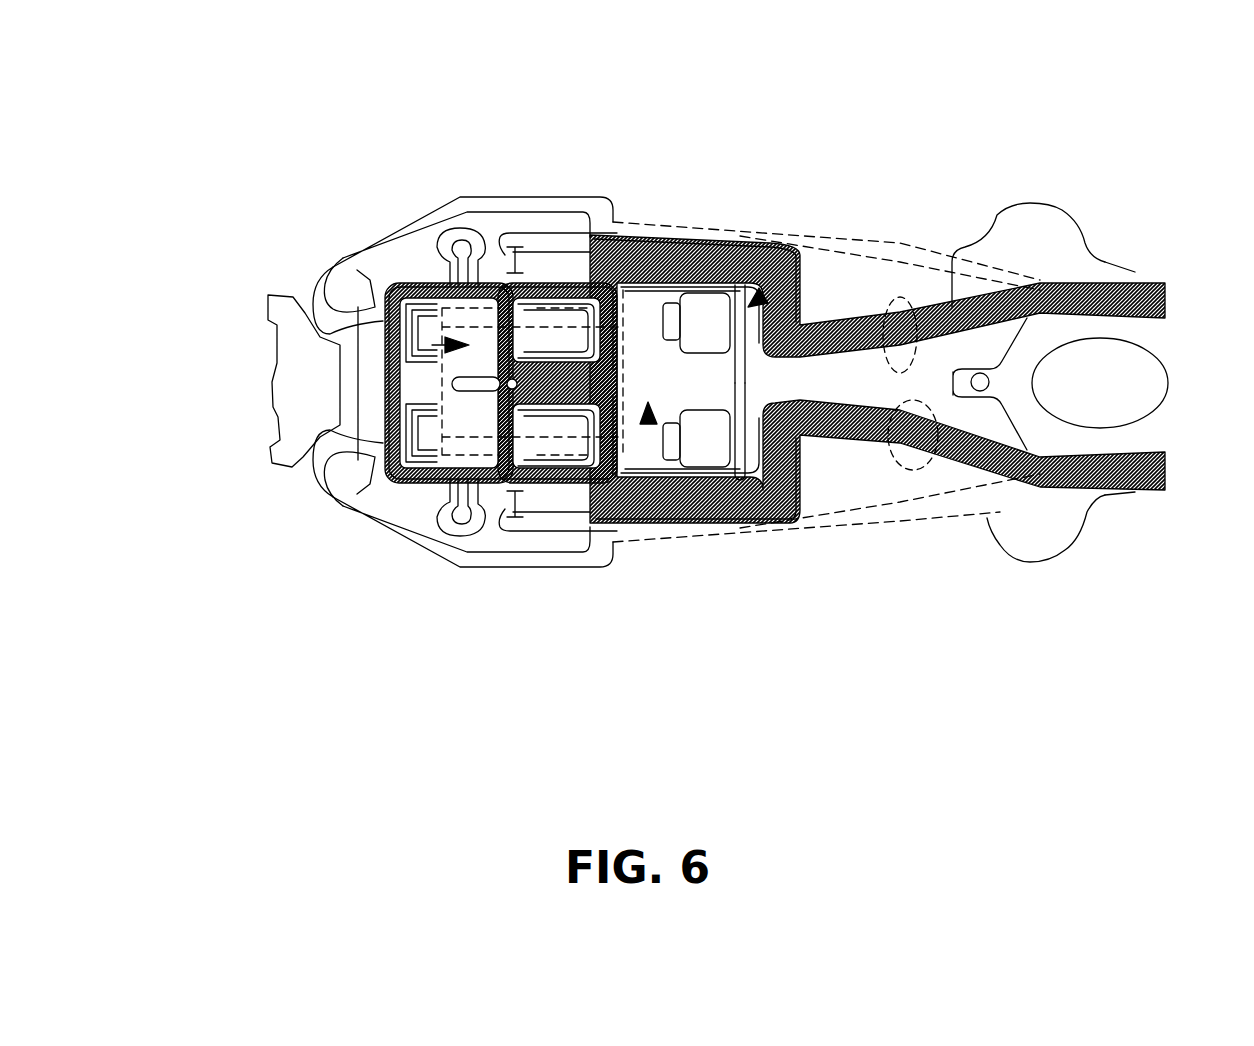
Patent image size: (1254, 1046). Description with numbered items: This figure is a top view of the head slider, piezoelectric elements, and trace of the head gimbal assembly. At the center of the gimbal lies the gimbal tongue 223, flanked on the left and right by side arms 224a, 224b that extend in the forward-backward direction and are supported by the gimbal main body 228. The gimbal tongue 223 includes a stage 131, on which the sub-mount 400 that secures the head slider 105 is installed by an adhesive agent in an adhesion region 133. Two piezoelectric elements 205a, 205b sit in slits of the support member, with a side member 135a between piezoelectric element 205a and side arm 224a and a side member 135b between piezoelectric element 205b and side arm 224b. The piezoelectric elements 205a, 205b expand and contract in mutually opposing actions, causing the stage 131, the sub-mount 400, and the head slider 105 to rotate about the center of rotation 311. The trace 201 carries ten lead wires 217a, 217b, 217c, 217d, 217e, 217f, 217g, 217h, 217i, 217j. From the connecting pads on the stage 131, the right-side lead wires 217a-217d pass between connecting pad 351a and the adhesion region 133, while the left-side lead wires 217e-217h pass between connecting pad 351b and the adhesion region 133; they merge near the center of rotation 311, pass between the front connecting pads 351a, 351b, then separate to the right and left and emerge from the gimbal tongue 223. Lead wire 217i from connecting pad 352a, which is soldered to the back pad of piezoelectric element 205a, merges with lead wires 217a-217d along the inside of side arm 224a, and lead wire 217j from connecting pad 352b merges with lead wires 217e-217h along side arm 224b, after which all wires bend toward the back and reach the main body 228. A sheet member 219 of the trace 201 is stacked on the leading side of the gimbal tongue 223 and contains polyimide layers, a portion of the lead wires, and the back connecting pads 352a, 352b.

The head slider 105 is at (485, 283).
The stage 131 is at (415, 475).
The adhesion region 133 is at (345, 268).
The side member 135a is at (547, 277).
The side member 135b is at (553, 500).
The trace 201 is at (980, 250).
The piezoelectric element 205a is at (673, 322).
The piezoelectric element 205b is at (673, 443).
The lead wire 217a is at (626, 250).
The lead wire 217b is at (626, 250).
The lead wire 217c is at (626, 250).
The lead wire 217d is at (390, 285).
The lead wire 217e is at (689, 498).
The lead wire 217f is at (689, 498).
The lead wire 217g is at (689, 498).
The lead wire 217h is at (360, 537).
The lead wire 217i is at (690, 262).
The lead wire 217j is at (625, 520).
The sheet member 219 is at (650, 424).
The gimbal tongue 223 is at (752, 305).
The side arm 224a is at (622, 222).
The side arm 224b is at (880, 522).
The main body 228 is at (1125, 262).
The center of rotation 311 is at (323, 423).
The connecting pad 351a is at (430, 345).
The connecting pad 351b is at (553, 433).
The connecting pad 352a is at (713, 333).
The connecting pad 352b is at (713, 453).
The sub-mount 400 is at (437, 283).